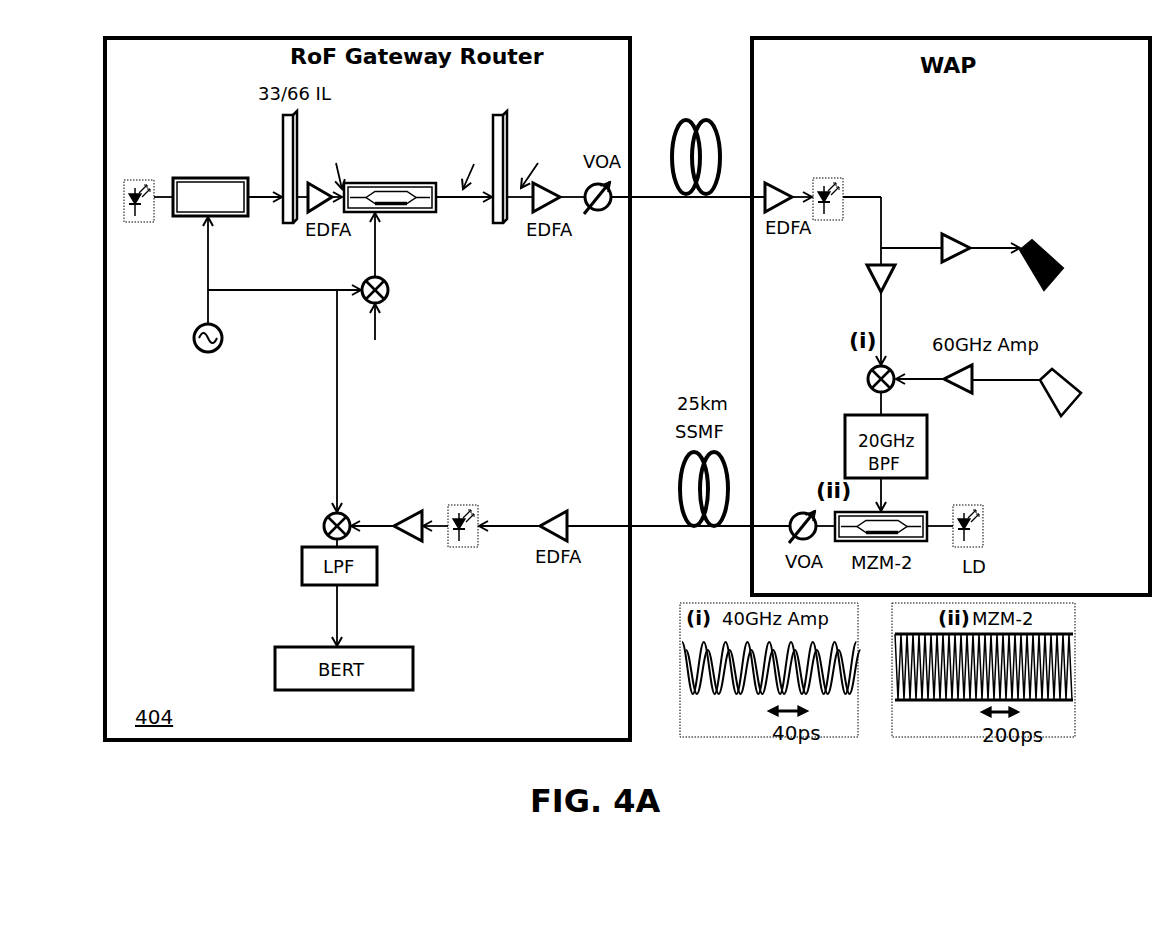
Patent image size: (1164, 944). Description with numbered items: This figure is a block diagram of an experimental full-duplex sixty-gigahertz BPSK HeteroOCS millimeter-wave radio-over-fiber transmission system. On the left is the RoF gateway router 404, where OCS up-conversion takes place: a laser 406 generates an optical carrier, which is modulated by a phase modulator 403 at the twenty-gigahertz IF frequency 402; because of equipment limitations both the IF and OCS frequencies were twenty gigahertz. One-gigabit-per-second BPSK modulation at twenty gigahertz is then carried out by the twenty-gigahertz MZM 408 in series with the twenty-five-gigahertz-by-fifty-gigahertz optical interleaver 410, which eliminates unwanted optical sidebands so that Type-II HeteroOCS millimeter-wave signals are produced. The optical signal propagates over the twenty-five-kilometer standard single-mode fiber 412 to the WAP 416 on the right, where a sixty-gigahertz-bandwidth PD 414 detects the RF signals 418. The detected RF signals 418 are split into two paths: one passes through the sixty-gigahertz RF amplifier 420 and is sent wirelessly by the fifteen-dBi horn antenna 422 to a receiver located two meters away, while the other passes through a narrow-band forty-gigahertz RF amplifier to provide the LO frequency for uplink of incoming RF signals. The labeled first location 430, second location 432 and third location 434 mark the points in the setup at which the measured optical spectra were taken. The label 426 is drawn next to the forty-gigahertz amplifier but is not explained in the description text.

The IF frequency 402 is at (207, 243).
The phase modulator 403 is at (230, 216).
The RoF gateway router 404 is at (378, 250).
The laser 406 is at (130, 180).
The 20-GHz MZM 408 is at (403, 208).
The optical interleaver 410 is at (493, 116).
The standard single-mode fiber 412 is at (672, 176).
The PD 414 is at (830, 178).
The WAP 416 is at (951, 316).
The RF signals 418 is at (881, 200).
The 60-GHz RF amplifier 420 is at (965, 262).
The horn antenna 422 is at (1052, 263).
The 40 GHz amplifier 426 is at (868, 270).
The location (1) 430 is at (366, 133).
The location (2) 432 is at (467, 148).
The location (3) 434 is at (589, 130).